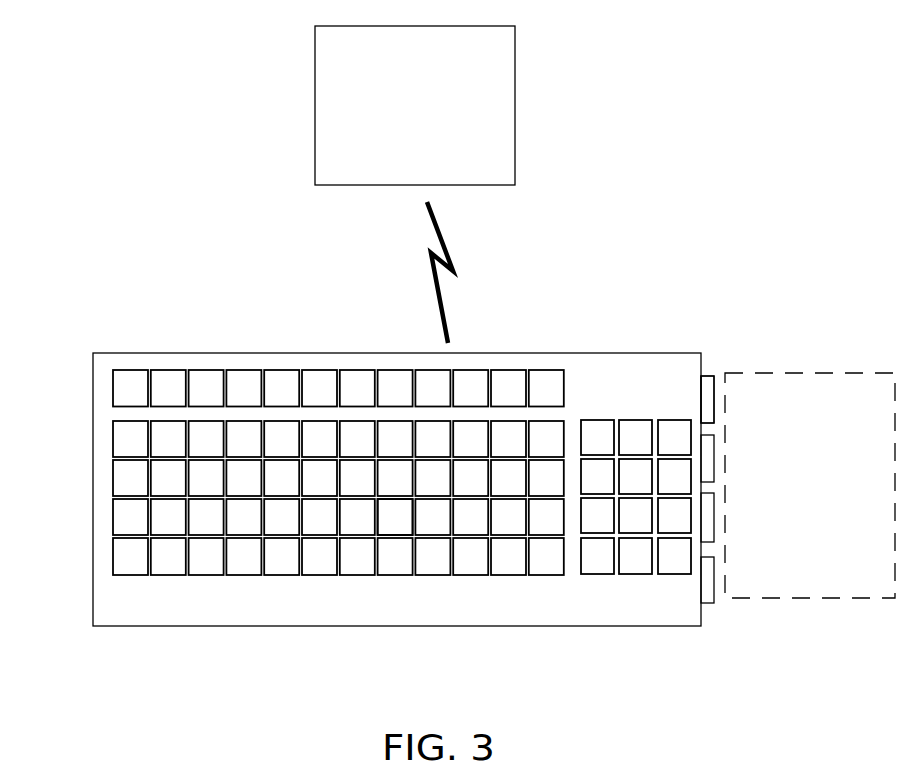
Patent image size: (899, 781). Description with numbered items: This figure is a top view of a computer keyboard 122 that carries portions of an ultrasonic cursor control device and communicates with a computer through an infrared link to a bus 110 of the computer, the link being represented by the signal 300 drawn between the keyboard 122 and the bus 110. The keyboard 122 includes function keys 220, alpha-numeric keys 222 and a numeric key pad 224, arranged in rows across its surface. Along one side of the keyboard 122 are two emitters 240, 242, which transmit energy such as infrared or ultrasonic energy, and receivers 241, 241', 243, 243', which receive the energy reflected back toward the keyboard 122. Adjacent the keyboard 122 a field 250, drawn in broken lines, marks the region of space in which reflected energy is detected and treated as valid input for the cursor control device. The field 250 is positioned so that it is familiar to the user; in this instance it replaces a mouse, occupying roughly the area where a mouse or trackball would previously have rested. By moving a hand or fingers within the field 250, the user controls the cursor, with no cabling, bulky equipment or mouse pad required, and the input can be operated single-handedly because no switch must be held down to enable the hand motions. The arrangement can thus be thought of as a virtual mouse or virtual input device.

The bus 110 is at (490, 125).
The wireless signal 300 is at (452, 267).
The keyboard 122 is at (100, 432).
The function keys 220 is at (204, 385).
The alpha-numeric keys 222 is at (392, 517).
The numeric key pad 224 is at (633, 553).
The emitter 240 is at (745, 502).
The receiver 241 is at (730, 367).
The emitter 242 is at (707, 400).
The receiver 241' is at (745, 458).
The receiver 243' is at (745, 517).
The receiver 243 is at (720, 625).
The field 250 is at (827, 575).